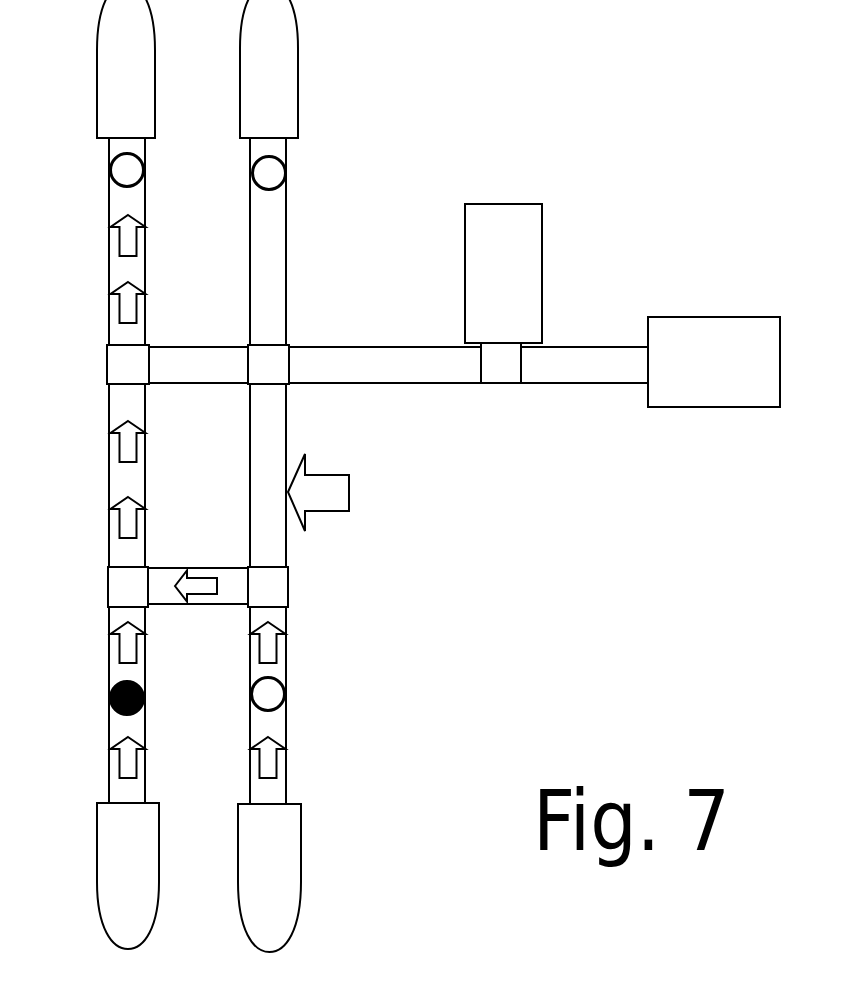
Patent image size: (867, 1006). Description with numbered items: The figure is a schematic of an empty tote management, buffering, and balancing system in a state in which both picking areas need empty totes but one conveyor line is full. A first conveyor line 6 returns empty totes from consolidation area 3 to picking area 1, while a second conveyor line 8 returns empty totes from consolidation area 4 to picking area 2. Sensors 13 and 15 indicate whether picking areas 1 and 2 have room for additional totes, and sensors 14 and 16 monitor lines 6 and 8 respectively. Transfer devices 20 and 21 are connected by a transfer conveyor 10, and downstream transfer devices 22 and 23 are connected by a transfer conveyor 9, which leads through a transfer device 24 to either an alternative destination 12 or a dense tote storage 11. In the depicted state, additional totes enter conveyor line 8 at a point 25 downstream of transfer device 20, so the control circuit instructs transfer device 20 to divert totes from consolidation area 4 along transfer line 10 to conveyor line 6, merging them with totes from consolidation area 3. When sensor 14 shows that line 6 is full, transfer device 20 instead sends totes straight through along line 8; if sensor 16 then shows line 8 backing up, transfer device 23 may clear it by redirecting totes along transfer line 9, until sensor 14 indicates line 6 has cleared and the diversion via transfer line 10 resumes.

The picking area 1 is at (117, 96).
The picking area 2 is at (260, 93).
The consolidation area 3 is at (121, 859).
The consolidation area 4 is at (264, 857).
The first conveyor line 6 is at (110, 207).
The conveyor line 8 is at (288, 230).
The transfer conveyor 9 is at (410, 346).
The transfer conveyor 10 is at (172, 568).
The dense tote storage 11 is at (518, 249).
The alternative destination 12 is at (701, 362).
The sensor 13 is at (125, 170).
The sensor 14 is at (144, 698).
The sensor 15 is at (270, 168).
The sensor 16 is at (273, 705).
The transfer device 20 is at (283, 592).
The transfer device 21 is at (108, 585).
The transfer device 22 is at (107, 362).
The transfer device 23 is at (285, 353).
The transfer device 24 is at (497, 363).
The point 25 is at (338, 492).